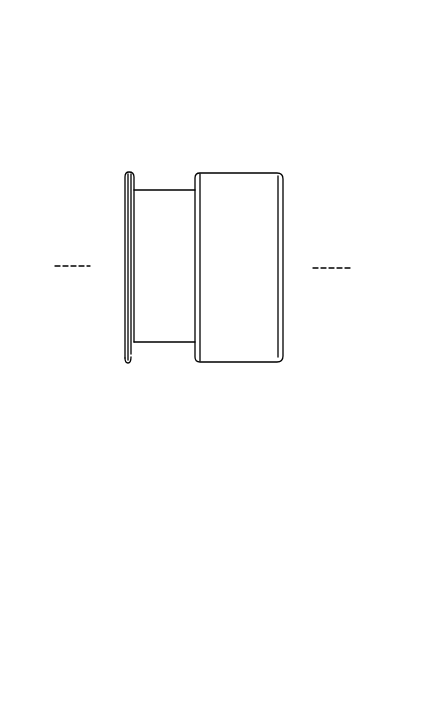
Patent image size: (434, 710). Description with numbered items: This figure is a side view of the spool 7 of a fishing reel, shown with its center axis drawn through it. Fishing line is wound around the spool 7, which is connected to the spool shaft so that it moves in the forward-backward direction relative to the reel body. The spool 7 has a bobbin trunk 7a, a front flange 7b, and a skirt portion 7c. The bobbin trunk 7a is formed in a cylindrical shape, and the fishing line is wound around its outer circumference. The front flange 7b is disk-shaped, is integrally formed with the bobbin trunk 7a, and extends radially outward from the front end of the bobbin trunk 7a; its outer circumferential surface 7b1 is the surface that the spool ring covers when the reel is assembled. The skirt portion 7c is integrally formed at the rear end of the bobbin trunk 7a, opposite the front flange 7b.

The spool 7 is at (205, 136).
The bobbin trunk 7a is at (165, 227).
The front flange 7b is at (135, 322).
The outer circumferential surface 7b1 is at (128, 170).
The skirt portion 7c is at (232, 369).